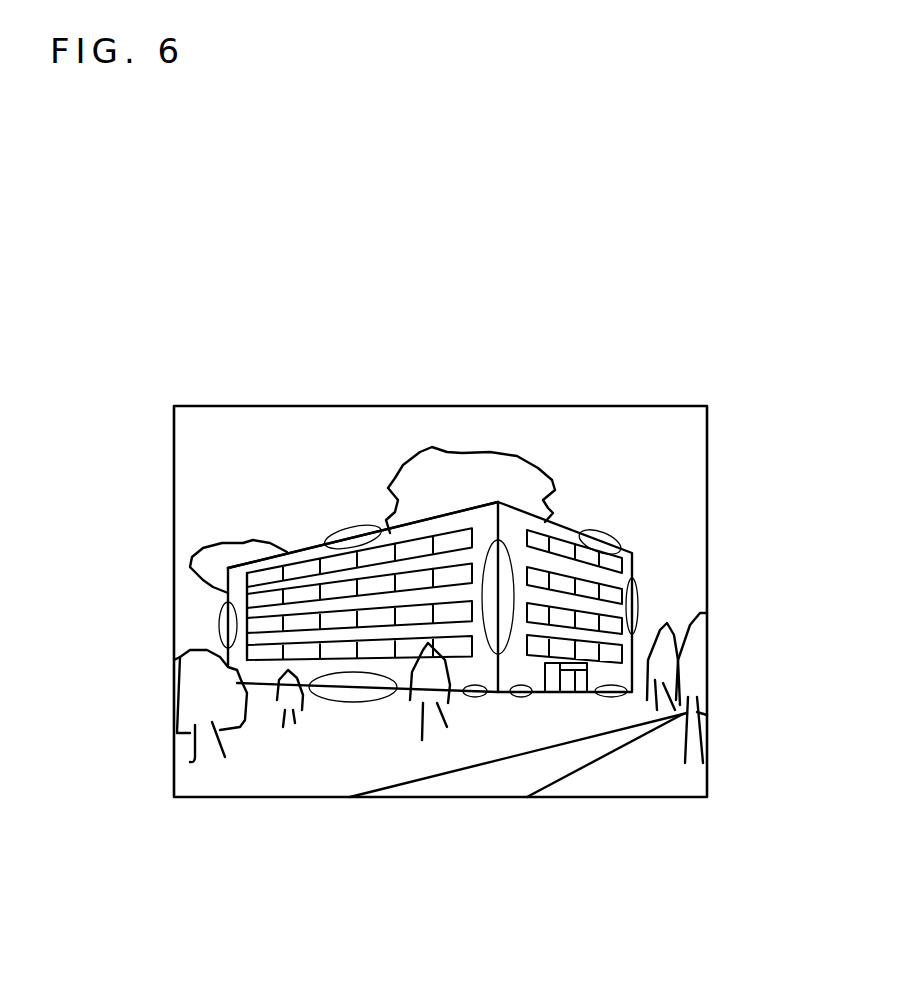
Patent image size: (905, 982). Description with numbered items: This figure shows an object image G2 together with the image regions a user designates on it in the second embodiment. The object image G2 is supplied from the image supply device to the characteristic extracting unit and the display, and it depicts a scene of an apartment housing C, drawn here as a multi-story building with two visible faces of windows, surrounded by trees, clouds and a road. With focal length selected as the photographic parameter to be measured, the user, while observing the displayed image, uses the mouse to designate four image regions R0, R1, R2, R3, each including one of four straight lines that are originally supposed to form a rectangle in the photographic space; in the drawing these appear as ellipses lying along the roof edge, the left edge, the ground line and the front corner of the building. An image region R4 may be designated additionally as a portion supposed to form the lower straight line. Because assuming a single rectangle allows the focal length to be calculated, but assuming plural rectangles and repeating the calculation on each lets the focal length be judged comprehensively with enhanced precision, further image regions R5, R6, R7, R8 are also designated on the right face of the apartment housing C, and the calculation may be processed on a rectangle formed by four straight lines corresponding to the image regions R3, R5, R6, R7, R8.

The object image G2 is at (425, 407).
The apartment housing C is at (390, 535).
The image region R0 is at (330, 533).
The image region R1 is at (220, 611).
The image region R2 is at (352, 702).
The image region R3 is at (513, 563).
The image region R4 is at (477, 698).
The image region R5 is at (617, 538).
The image region R6 is at (638, 603).
The image region R7 is at (612, 698).
The image region R8 is at (518, 698).